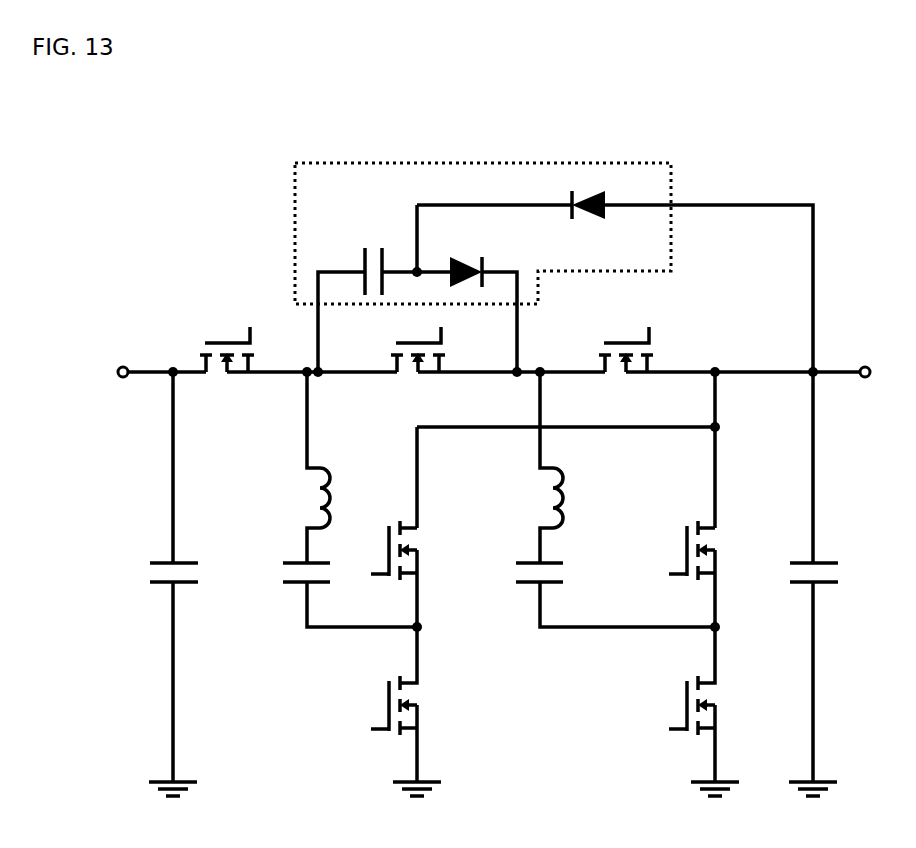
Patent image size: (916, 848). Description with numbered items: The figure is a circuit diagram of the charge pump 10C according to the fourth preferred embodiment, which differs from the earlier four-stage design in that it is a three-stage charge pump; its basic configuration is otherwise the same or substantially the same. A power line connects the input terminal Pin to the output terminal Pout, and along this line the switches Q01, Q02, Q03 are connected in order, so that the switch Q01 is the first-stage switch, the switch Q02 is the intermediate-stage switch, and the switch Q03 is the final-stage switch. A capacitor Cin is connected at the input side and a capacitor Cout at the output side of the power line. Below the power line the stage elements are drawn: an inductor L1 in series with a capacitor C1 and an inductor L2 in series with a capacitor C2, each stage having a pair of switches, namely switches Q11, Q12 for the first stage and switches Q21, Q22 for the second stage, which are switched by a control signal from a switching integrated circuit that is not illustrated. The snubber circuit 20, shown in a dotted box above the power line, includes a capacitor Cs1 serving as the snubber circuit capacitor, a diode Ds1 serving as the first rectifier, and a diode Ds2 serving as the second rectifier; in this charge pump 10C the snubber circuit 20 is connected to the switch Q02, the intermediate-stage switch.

The charge pump 10C is at (182, 165).
The snubber circuit 20 is at (672, 181).
The input terminal Pin is at (118, 350).
The output terminal Pout is at (869, 350).
The switch Q01 is at (215, 346).
The switch Q02 is at (405, 346).
The switch Q03 is at (613, 346).
The capacitor Cs1 is at (384, 296).
The diode Ds1 is at (483, 297).
The diode Ds2 is at (599, 223).
The capacitor Cin is at (186, 584).
The capacitor Cout is at (830, 584).
The inductor L1 is at (329, 467).
The inductor L2 is at (562, 467).
The capacitor C1 is at (344, 595).
The capacitor C2 is at (610, 595).
The switch Q11 is at (391, 557).
The switch Q12 is at (392, 711).
The switch Q21 is at (689, 557).
The switch Q22 is at (689, 711).